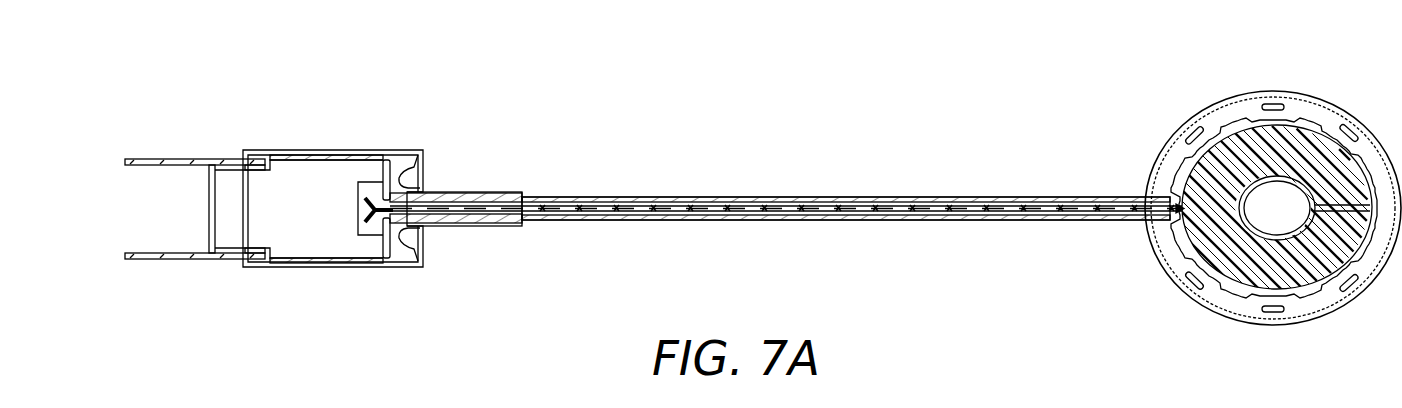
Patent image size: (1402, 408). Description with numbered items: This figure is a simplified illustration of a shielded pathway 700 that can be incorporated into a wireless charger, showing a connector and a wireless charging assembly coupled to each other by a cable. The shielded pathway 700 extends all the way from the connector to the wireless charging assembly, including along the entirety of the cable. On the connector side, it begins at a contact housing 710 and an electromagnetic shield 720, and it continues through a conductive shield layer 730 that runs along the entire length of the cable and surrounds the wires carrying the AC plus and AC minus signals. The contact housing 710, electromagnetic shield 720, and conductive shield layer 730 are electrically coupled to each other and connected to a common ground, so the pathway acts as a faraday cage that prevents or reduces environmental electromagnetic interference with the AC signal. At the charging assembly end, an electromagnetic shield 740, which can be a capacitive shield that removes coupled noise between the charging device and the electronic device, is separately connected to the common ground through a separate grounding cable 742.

The shielded pathway 700 is at (513, 118).
The contact housing 710 is at (182, 158).
The electromagnetic shield 720 is at (327, 152).
The conductive shield layer 730 is at (777, 197).
The grounding cable 742 is at (940, 205).
The electromagnetic shield 740 is at (1248, 157).